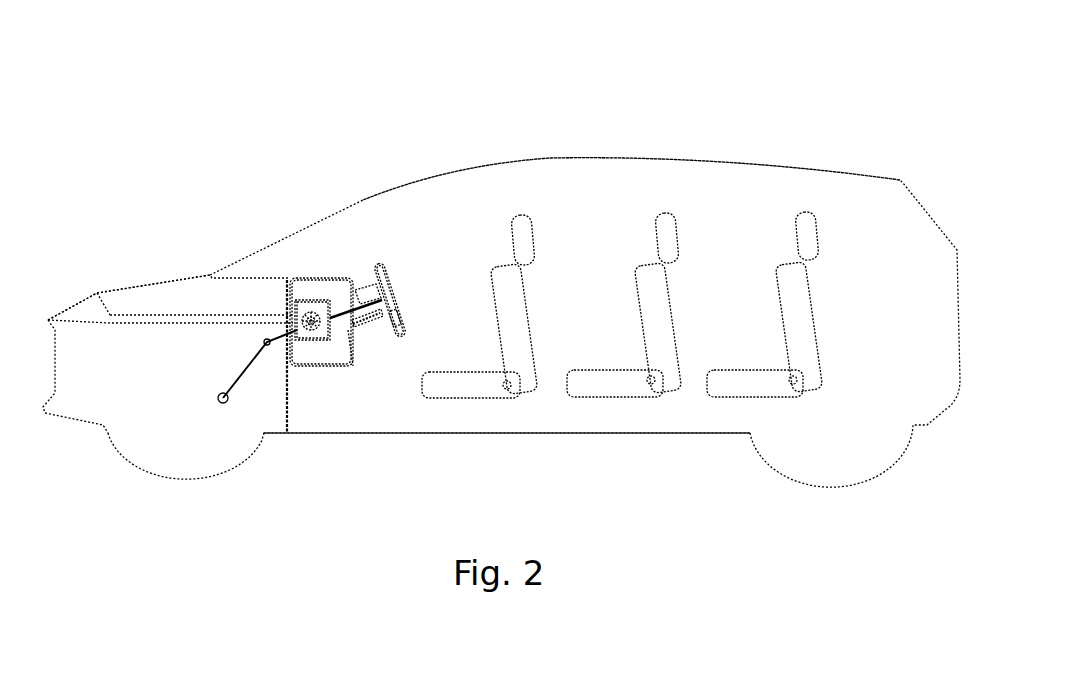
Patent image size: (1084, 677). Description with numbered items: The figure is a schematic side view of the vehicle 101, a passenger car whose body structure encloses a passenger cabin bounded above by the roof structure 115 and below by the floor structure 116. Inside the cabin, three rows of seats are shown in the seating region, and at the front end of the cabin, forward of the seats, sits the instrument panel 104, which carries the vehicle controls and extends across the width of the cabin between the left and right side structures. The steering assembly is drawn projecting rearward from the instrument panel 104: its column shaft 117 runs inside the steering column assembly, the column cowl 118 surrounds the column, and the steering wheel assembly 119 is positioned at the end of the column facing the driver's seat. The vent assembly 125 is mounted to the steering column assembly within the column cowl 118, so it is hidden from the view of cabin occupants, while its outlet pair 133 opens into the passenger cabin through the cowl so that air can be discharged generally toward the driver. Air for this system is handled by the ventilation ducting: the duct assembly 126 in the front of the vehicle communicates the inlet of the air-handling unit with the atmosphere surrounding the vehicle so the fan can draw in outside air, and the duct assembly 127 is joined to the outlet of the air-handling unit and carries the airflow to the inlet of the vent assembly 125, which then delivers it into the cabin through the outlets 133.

The vehicle 101 is at (874, 98).
The instrument panel 104 is at (322, 367).
The roof structure 115 is at (550, 158).
The floor structure 116 is at (548, 435).
The column shaft 117 is at (343, 317).
The column cowl 118 is at (363, 282).
The steering wheel assembly 119 is at (380, 250).
The vent assembly 125 is at (373, 334).
The duct assembly 126 is at (162, 323).
The duct assembly 127 is at (350, 330).
The outlet pair 133 is at (390, 313).